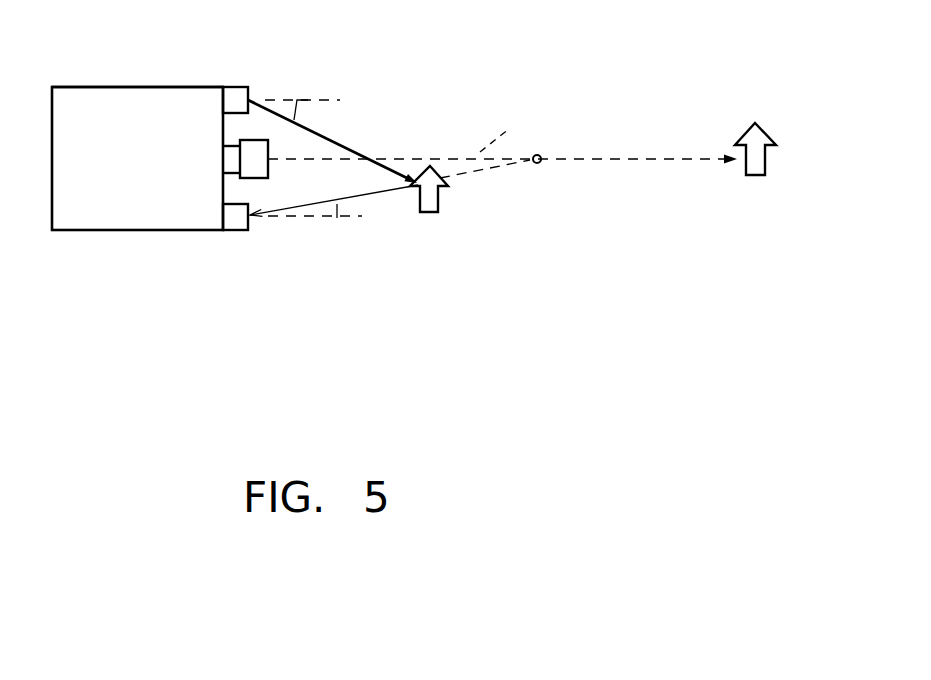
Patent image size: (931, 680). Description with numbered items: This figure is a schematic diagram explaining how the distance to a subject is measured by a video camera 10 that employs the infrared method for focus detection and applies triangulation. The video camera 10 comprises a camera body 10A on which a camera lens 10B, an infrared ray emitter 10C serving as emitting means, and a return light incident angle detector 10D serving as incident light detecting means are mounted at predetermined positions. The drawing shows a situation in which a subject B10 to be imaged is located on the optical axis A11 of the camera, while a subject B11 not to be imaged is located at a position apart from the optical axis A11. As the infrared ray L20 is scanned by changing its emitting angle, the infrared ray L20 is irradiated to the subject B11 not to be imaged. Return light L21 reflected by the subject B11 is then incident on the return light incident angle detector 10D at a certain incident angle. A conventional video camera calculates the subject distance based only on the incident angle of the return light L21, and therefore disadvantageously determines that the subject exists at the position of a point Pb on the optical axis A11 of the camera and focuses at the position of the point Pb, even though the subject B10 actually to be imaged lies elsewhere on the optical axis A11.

The video camera 10 is at (172, 72).
The camera body 10A is at (124, 76).
The camera lens 10B is at (270, 158).
The infrared ray emitter 10C is at (255, 74).
The return light incident angle detector 10D is at (232, 232).
The infrared ray L20 is at (350, 148).
The return light L21 is at (383, 194).
The subject not to be imaged B11 is at (440, 195).
The subject to be imaged B10 is at (762, 141).
The optical axis A11 is at (505, 128).
The point Pb is at (541, 177).